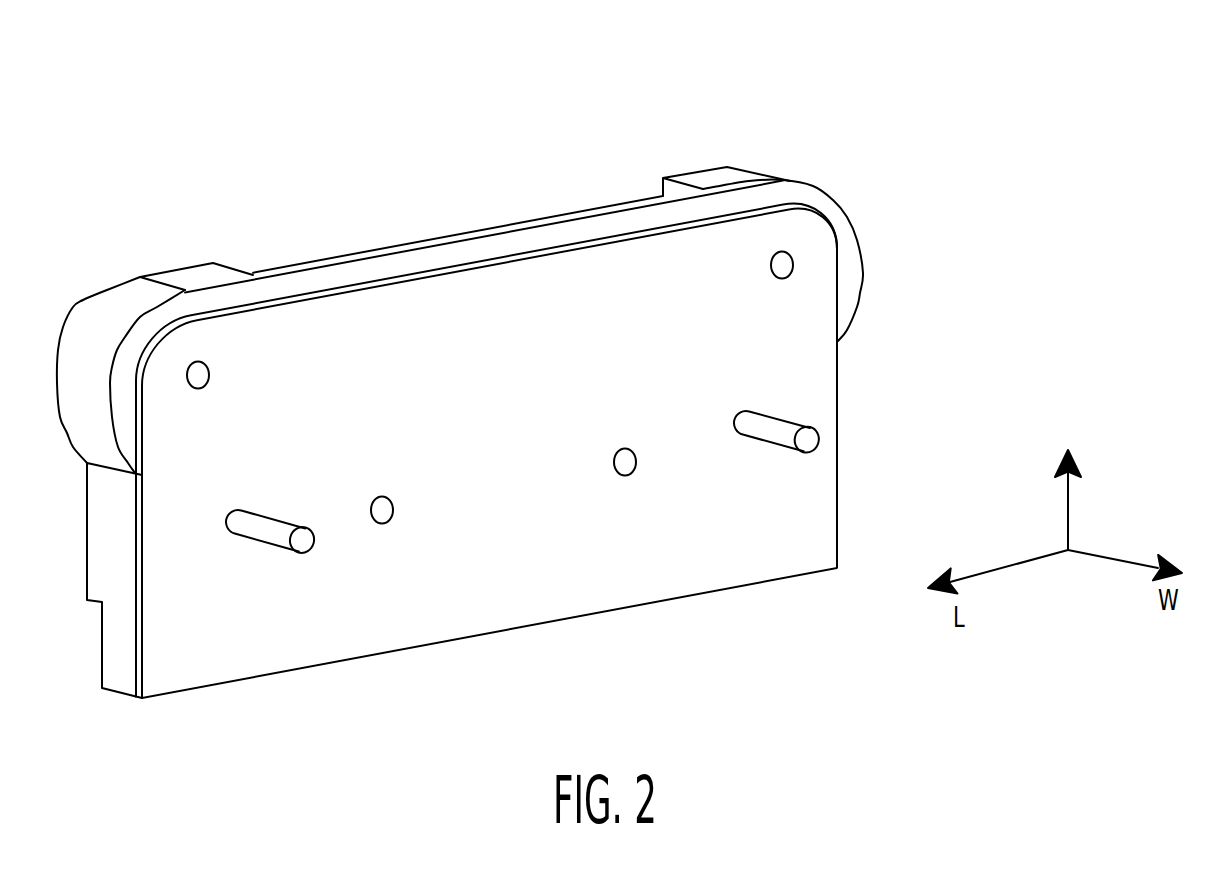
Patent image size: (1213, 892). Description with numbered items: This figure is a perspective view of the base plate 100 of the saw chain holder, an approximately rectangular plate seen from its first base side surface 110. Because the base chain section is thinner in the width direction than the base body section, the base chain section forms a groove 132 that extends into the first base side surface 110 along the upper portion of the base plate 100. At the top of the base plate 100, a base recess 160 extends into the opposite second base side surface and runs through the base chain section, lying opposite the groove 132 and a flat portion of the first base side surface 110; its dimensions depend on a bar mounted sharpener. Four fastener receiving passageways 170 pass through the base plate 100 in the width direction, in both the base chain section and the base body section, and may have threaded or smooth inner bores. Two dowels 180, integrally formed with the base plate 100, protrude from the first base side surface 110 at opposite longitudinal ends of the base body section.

The base plate 100 is at (533, 365).
The first base side surface 110 is at (803, 370).
The groove 132 is at (800, 198).
The base recess 160 is at (305, 245).
The fastener receiving passageways 170 is at (203, 373).
The dowels 180 is at (272, 522).